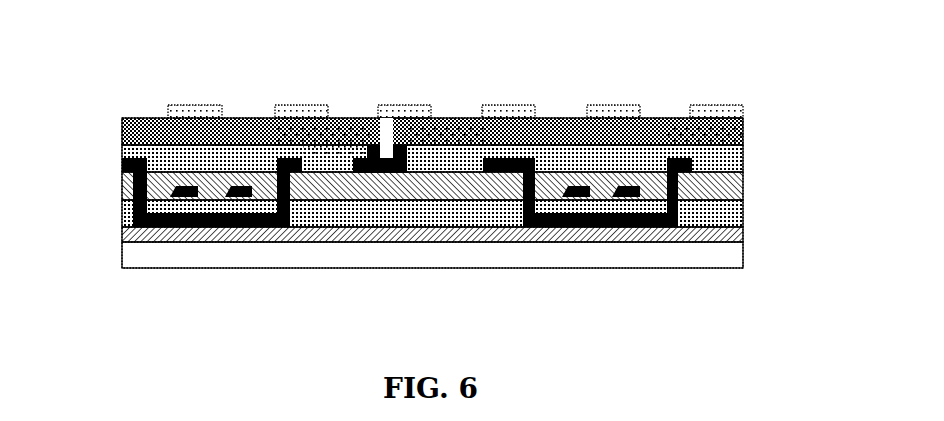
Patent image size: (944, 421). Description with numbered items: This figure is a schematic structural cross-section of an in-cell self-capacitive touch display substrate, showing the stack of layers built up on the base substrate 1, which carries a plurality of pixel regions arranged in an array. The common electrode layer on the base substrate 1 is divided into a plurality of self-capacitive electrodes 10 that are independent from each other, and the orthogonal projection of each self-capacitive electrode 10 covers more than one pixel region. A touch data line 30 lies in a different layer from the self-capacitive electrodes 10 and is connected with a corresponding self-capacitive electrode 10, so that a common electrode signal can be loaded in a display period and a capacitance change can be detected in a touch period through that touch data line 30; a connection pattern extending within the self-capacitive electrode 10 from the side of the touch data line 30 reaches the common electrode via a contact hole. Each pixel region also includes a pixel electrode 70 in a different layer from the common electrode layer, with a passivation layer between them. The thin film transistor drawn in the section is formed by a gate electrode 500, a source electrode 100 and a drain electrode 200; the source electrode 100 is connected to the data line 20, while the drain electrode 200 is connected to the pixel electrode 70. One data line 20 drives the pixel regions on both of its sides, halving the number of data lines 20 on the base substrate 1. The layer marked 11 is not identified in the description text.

The base substrate 1 is at (748, 248).
The self-capacitive electrode 10 is at (746, 112).
The planarization layer 11 is at (746, 160).
The data line 20 is at (120, 163).
The touch data line 30 is at (366, 158).
The pixel electrode 70 is at (671, 136).
The source electrode 100 is at (120, 192).
The drain electrode 200 is at (295, 205).
The gate electrode 500 is at (240, 182).